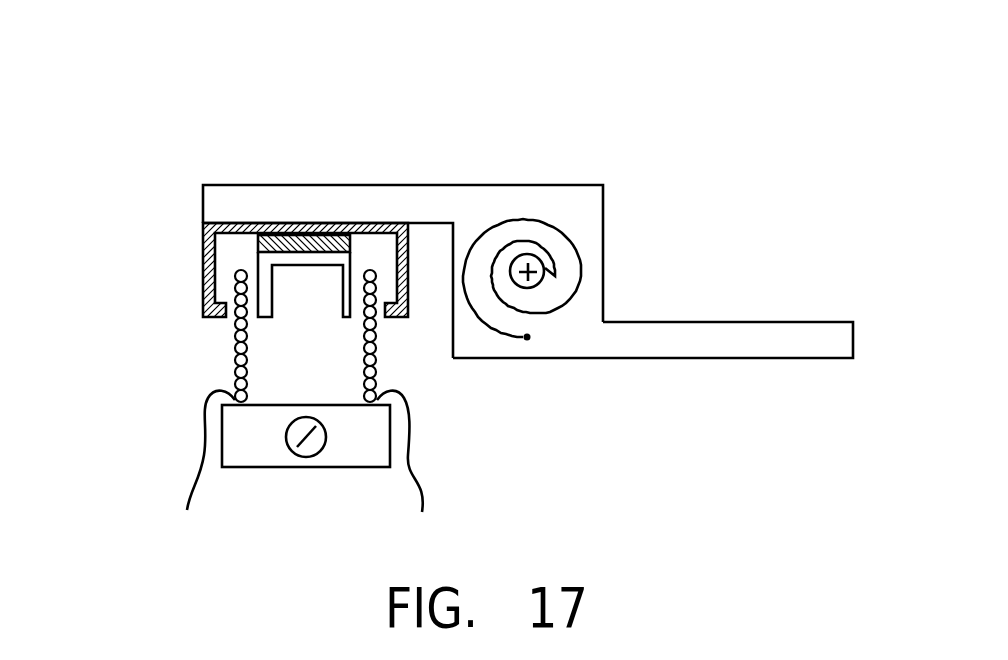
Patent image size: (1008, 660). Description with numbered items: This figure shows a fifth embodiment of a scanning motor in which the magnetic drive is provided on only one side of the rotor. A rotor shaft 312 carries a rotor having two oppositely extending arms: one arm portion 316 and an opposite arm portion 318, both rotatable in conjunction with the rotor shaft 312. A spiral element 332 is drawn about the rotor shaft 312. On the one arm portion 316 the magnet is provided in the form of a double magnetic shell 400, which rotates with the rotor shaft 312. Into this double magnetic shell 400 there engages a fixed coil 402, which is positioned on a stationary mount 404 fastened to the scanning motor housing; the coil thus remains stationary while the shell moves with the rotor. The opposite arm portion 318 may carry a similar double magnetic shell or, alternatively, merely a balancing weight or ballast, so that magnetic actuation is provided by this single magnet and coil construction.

The rotor shaft 312 is at (528, 272).
The arm portion 316 is at (340, 195).
The arm portion 318 is at (718, 358).
The spiral spring 332 is at (495, 330).
The double magnetic shell 400 is at (203, 260).
The fixed coil 402 is at (235, 343).
The stationary mount 404 is at (323, 467).